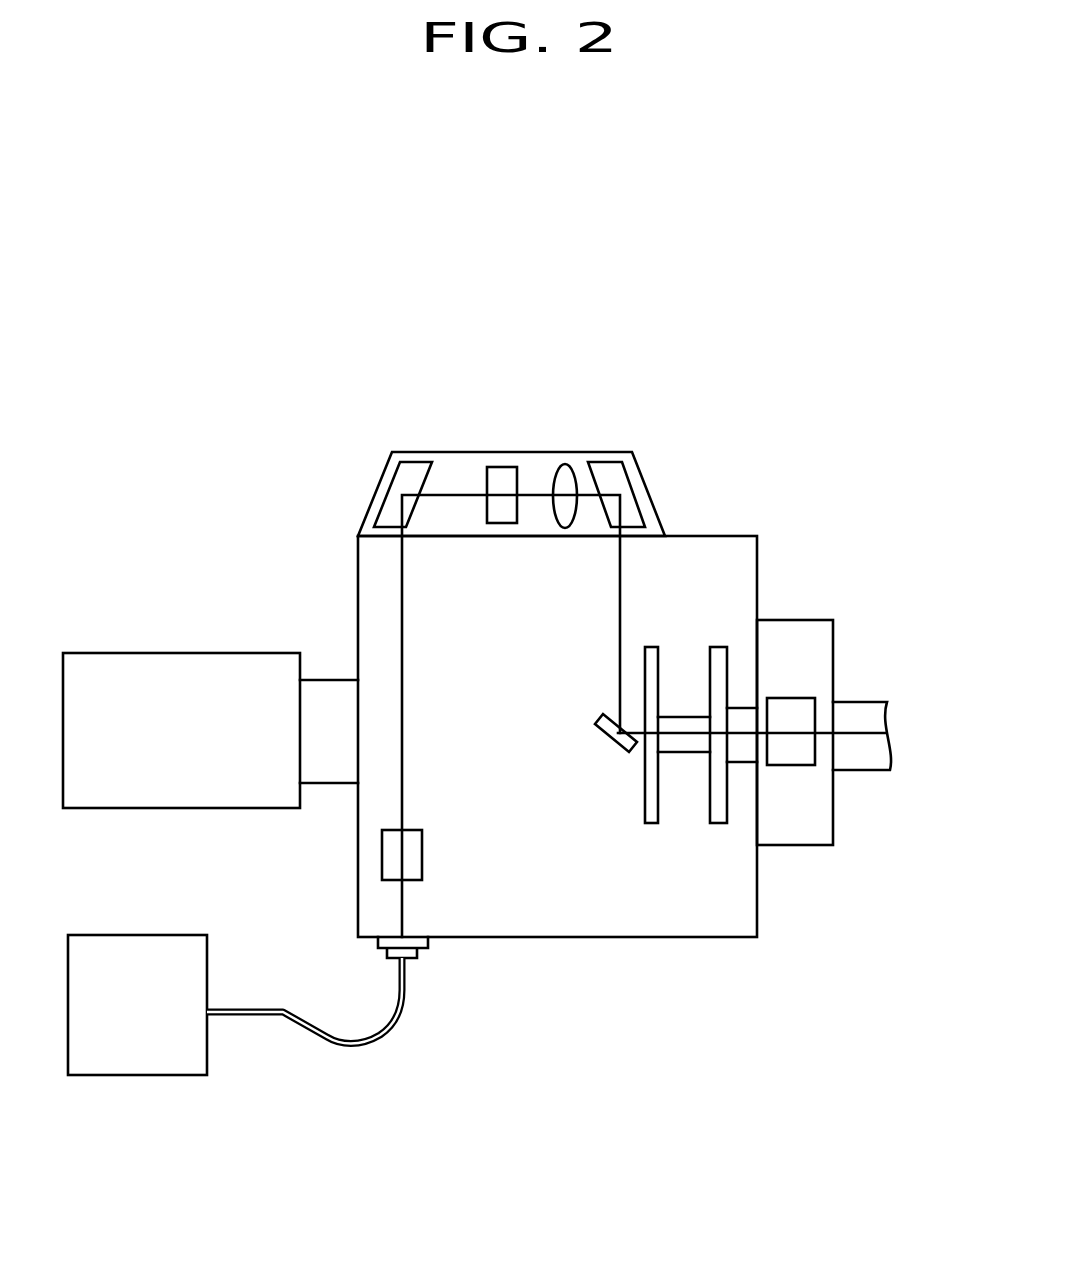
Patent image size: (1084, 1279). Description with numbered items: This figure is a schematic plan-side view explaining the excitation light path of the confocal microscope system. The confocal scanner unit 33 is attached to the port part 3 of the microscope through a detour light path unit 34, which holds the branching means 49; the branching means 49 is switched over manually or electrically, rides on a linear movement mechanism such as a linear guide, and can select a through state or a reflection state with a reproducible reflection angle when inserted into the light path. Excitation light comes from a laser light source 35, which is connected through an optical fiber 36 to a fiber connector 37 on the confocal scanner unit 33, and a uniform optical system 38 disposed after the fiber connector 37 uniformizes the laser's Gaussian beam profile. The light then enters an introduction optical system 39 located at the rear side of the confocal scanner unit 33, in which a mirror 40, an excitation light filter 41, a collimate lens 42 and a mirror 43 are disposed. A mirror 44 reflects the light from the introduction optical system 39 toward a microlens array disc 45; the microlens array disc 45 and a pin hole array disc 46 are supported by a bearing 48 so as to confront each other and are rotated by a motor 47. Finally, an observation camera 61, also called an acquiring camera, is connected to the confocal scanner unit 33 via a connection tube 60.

The port part 3 is at (852, 700).
The confocal scanner unit 33 is at (710, 536).
The detour light path unit 34 is at (780, 620).
The laser light source 35 is at (150, 1075).
The optical fiber 36 is at (317, 1035).
The fiber connector 37 is at (425, 940).
The uniform optical system 38 is at (422, 853).
The introduction optical system 39 is at (453, 452).
The mirror 40 is at (407, 462).
The excitation light filter 41 is at (487, 467).
The collimate lens 42 is at (553, 464).
The mirror 43 is at (600, 462).
The mirror 44 is at (618, 752).
The microlens array disc 45 is at (650, 823).
The pin hole array disc 46 is at (720, 823).
The motor 47 is at (740, 762).
The bearing 48 is at (685, 752).
The branching means 49 is at (797, 765).
The connection tube 60 is at (327, 785).
The observation camera 61 is at (168, 653).